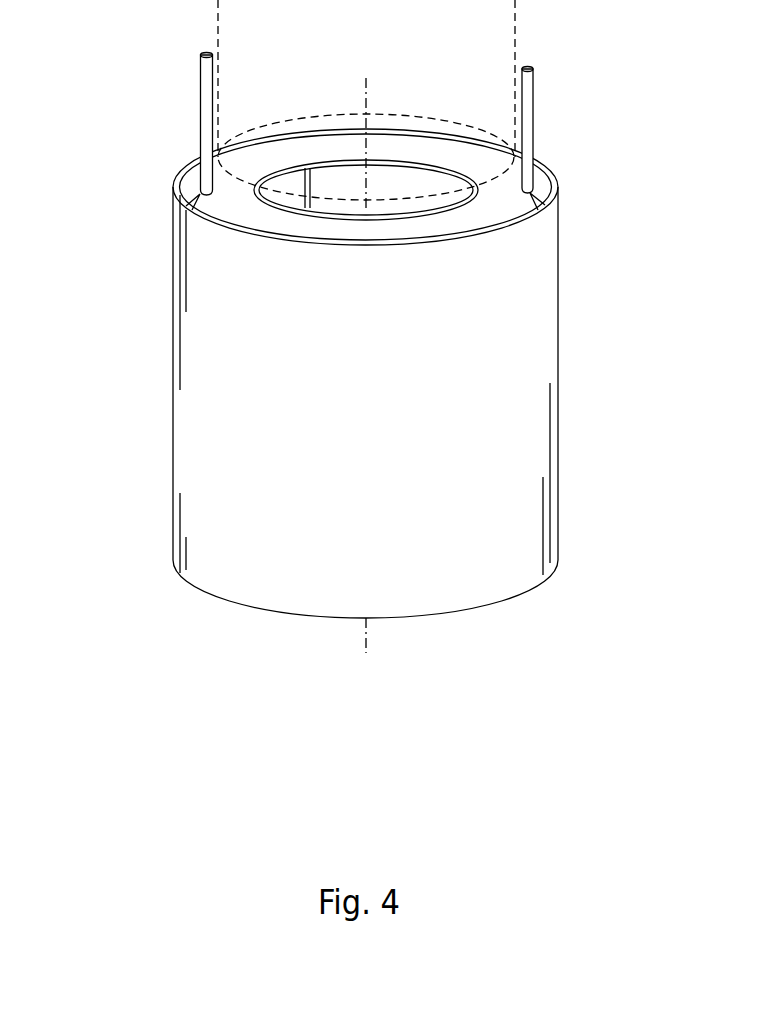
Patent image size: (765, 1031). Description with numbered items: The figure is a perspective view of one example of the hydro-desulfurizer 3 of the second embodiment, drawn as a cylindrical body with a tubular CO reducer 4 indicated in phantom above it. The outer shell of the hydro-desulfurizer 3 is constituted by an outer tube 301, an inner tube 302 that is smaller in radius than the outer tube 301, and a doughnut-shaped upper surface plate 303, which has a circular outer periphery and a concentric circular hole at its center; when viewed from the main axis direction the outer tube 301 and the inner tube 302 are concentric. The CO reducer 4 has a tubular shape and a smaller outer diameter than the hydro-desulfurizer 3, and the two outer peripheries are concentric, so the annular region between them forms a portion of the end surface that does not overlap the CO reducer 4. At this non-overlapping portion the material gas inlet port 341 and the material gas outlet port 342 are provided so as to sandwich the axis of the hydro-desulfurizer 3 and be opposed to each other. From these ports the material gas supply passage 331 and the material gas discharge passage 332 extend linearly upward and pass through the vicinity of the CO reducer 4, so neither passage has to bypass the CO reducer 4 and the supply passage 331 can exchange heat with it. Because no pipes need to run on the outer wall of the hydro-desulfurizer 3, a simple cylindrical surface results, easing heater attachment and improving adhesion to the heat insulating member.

The hydro-desulfurizer 3 is at (360, 358).
The outer tube 301 is at (402, 585).
The inner tube 302 is at (395, 178).
The upper surface plate 303 is at (333, 145).
The material gas supply passage 331 is at (527, 120).
The material gas discharge passage 332 is at (207, 113).
The material gas inlet port 341 is at (530, 197).
The material gas outlet port 342 is at (197, 193).
The CO reducer 4 is at (515, 20).